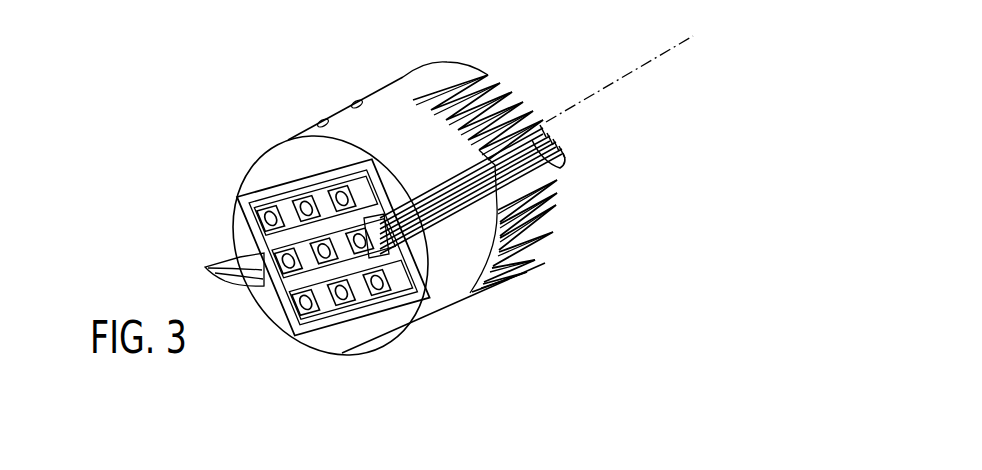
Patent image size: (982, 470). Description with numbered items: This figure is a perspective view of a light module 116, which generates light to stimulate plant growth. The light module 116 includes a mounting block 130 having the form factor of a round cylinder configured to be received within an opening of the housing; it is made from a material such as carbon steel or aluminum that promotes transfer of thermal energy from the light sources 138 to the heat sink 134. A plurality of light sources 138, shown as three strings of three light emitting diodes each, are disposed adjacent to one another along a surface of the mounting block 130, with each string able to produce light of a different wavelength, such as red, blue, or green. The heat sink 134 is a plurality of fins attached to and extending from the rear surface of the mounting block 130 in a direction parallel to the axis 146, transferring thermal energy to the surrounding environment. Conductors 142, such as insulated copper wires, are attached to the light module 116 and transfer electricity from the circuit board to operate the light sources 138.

The light module 116 is at (596, 301).
The mounting block 130 is at (388, 92).
The heat sink 134 is at (553, 232).
The light sources 138 is at (302, 199).
The conductors 142 is at (207, 266).
The axis 146 is at (646, 64).